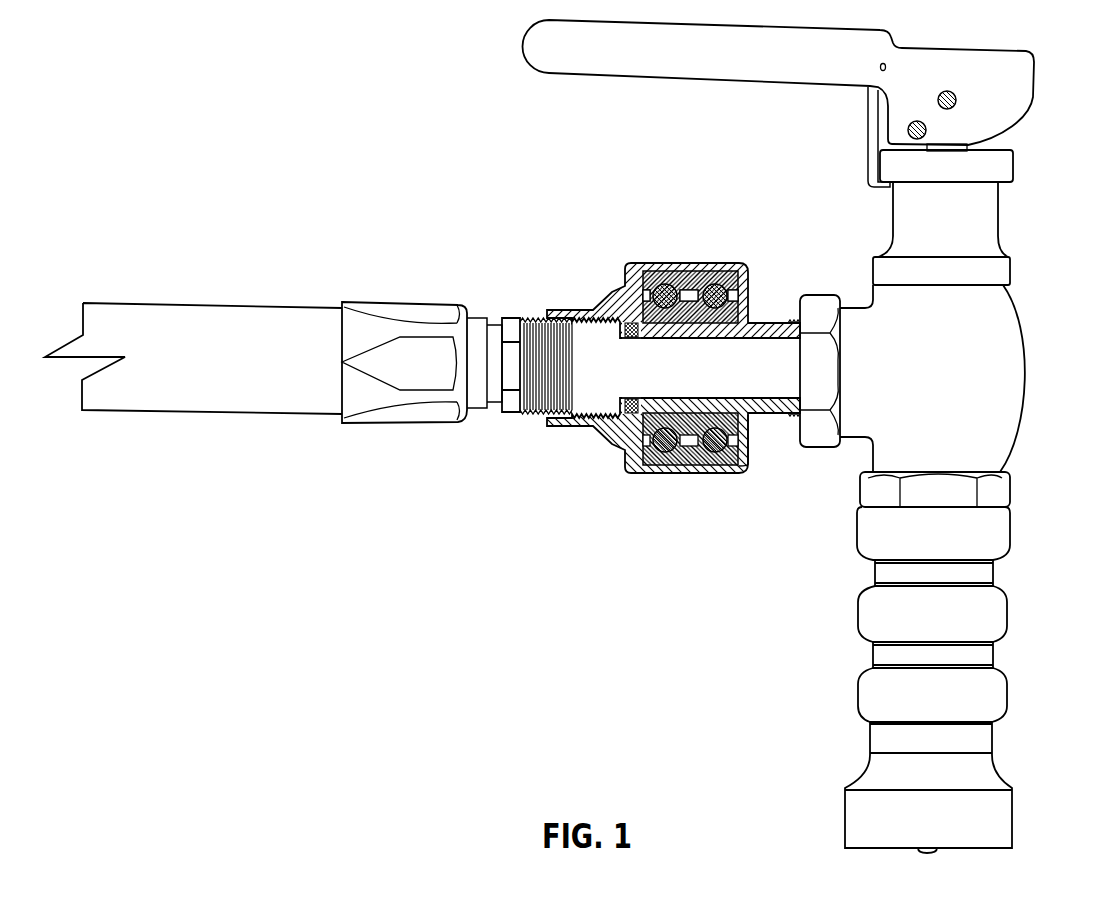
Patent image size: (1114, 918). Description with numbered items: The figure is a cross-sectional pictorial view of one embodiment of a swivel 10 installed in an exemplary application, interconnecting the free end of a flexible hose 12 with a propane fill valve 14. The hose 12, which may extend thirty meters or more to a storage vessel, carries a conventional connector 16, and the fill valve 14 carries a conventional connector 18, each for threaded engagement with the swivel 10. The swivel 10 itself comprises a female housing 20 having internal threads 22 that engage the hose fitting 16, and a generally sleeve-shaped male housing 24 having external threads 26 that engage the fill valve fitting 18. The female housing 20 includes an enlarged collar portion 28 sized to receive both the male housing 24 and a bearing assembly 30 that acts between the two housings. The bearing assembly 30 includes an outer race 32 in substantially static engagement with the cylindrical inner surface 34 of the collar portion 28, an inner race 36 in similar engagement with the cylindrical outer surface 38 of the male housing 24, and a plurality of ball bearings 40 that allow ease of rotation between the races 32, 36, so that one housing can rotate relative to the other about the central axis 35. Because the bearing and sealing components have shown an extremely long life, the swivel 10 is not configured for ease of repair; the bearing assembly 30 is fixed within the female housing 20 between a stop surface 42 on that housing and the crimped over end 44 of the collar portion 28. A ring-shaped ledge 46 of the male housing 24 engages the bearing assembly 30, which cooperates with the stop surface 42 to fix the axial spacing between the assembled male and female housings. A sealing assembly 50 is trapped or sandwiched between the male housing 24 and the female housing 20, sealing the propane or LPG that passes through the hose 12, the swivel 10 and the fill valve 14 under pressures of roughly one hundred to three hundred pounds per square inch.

The swivel 10 is at (593, 261).
The flexible hose 12 is at (297, 403).
The fill valve 14 is at (997, 333).
The connector 16 is at (505, 405).
The connector 18 is at (817, 442).
The female housing 20 is at (607, 308).
The internal threads 22 is at (587, 328).
The male housing 24 is at (752, 325).
The external threads 26 is at (792, 327).
The enlarged collar portion 28 is at (690, 468).
The bearing assembly 30 is at (670, 293).
The outer race 32 is at (727, 273).
The cylindrical inner surface 34 is at (695, 280).
The central axis 35 is at (730, 372).
The inner race 36 is at (733, 307).
The cylindrical outer surface 38 is at (660, 320).
The ball bearings 40 is at (710, 445).
The stop surface 42 is at (643, 463).
The crimped over end 44 is at (737, 472).
The ring-shaped ledge 46 is at (630, 418).
The sealing assembly 50 is at (632, 340).